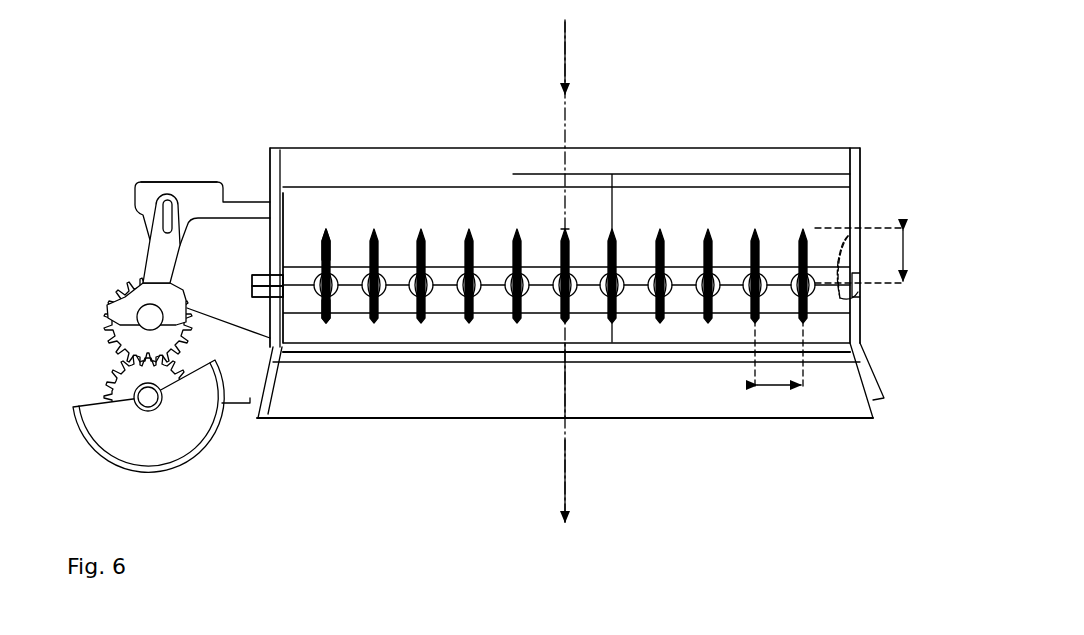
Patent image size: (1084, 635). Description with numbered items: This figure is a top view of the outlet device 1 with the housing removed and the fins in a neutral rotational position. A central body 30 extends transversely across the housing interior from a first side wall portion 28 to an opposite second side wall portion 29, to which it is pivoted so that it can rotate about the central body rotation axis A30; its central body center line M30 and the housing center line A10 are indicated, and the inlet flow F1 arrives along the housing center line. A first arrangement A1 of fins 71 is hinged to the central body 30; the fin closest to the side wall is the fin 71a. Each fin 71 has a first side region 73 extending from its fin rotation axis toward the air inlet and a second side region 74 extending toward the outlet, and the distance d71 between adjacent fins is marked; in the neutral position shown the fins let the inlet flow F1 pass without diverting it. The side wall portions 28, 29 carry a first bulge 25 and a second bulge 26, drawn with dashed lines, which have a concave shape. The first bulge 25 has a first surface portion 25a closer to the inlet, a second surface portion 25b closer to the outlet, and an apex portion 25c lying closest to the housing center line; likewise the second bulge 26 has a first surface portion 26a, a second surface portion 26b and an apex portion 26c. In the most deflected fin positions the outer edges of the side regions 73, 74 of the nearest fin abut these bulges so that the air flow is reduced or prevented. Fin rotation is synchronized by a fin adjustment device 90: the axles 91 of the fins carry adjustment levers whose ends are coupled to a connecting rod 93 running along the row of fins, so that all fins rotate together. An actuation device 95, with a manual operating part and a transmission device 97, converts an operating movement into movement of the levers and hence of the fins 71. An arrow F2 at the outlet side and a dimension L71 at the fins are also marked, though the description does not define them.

The outlet device 1 is at (390, 70).
The first bulge 25 is at (284, 300).
The first surface portion 25a is at (292, 273).
The second surface portion 25b is at (295, 297).
The apex portion 25c is at (302, 293).
The second bulge 26 is at (831, 243).
The first surface portion 26a is at (834, 258).
The second surface portion 26b is at (843, 297).
The apex portion 26c is at (840, 287).
The first side wall portion 28 is at (299, 238).
The second side wall portion 29 is at (845, 207).
The central body 30 is at (760, 212).
The fin 71 is at (790, 228).
The fin 71a is at (337, 240).
The first side region 73 is at (325, 231).
The second side region 74 is at (326, 322).
The fin adjustment device 90 is at (155, 146).
The axle 91 is at (100, 455).
The connecting rod 93 is at (238, 200).
The actuation device 95 is at (78, 373).
The transmission device 97 is at (112, 297).
The first arrangement of at least one fin A1 is at (302, 215).
The housing center line A10 is at (563, 117).
The central body rotation axis A30 is at (350, 286).
The central body center line M30 is at (563, 222).
The inlet flow F1 is at (584, 58).
The force direction F2 is at (583, 481).
The blade length L71 is at (880, 255).
The distance of adjacent fins d71 is at (779, 369).